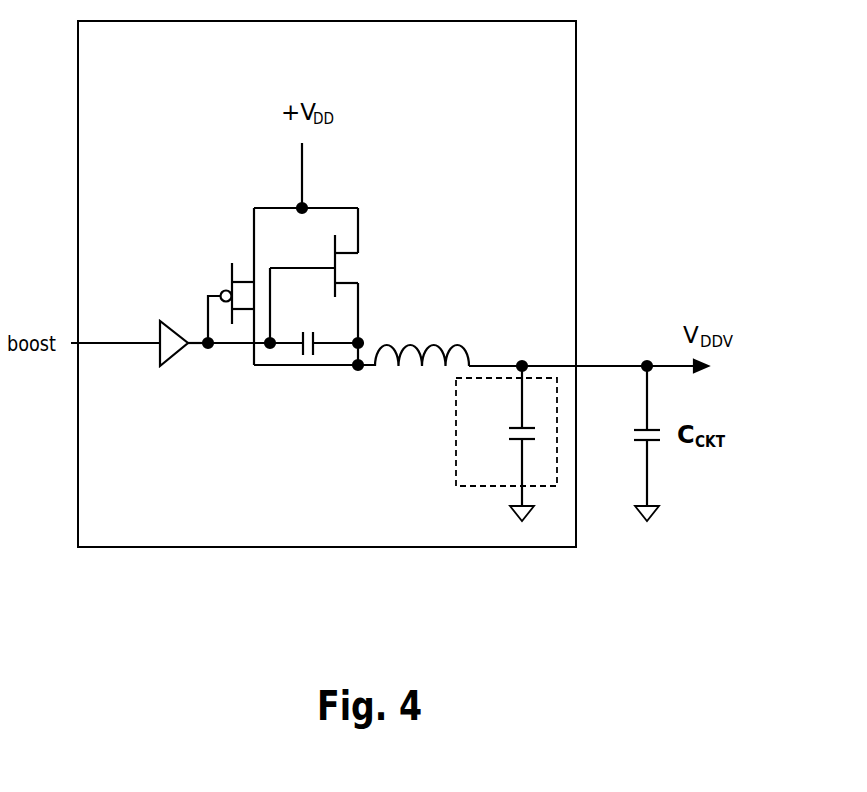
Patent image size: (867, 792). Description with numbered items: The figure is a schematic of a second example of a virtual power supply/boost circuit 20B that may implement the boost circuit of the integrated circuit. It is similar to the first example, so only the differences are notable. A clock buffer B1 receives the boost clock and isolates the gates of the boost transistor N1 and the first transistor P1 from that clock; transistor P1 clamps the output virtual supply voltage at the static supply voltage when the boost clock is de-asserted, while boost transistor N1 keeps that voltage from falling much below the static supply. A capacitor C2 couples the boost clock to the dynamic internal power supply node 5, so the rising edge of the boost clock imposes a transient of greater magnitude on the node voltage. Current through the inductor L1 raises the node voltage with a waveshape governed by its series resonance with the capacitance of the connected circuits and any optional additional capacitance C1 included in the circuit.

The virtual power supply/boost circuit 20B is at (485, 58).
The dynamic internal power supply node 5 is at (608, 367).
The first transistor P1 is at (231, 290).
The boost transistor N1 is at (332, 289).
The clock buffer B1 is at (184, 369).
The capacitor C2 is at (327, 368).
The inductor L1 is at (422, 339).
The additional capacitance C1 is at (506, 443).